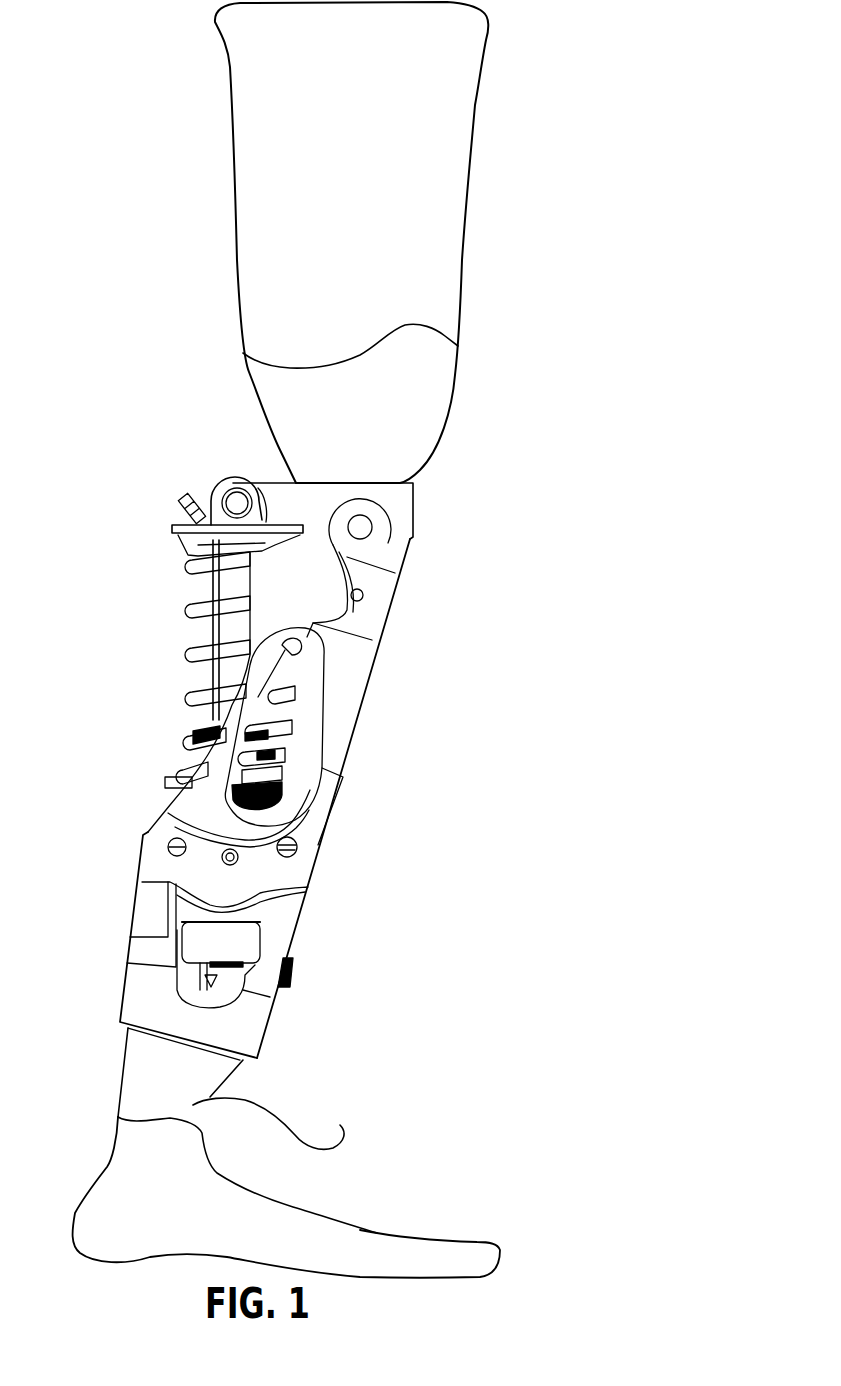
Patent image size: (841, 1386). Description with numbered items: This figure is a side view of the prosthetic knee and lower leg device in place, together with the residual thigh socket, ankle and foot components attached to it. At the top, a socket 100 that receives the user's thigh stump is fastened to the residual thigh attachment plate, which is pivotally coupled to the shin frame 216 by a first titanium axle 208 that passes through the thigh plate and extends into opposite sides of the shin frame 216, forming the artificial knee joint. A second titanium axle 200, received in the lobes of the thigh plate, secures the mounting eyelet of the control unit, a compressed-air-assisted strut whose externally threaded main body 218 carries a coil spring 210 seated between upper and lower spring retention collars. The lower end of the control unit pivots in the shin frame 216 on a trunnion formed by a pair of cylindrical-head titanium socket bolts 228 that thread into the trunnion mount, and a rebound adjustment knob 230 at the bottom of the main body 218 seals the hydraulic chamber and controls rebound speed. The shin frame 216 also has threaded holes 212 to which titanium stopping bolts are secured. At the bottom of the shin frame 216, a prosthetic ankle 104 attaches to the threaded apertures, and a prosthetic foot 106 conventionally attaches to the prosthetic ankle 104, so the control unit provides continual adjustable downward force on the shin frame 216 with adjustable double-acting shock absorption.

The socket 100 is at (412, 427).
The prosthetic ankle 104 is at (247, 1130).
The prosthetic foot 106 is at (357, 1248).
The second titanium axle 200 is at (212, 481).
The first titanium axle 208 is at (360, 527).
The coil spring 210 is at (187, 623).
The threaded holes 212 is at (362, 600).
The shin frame 216 is at (360, 803).
The main body 218 is at (193, 740).
The cylindrical-head titanium socket bolts 228 is at (153, 827).
The rebound adjustment knob 230 is at (290, 963).